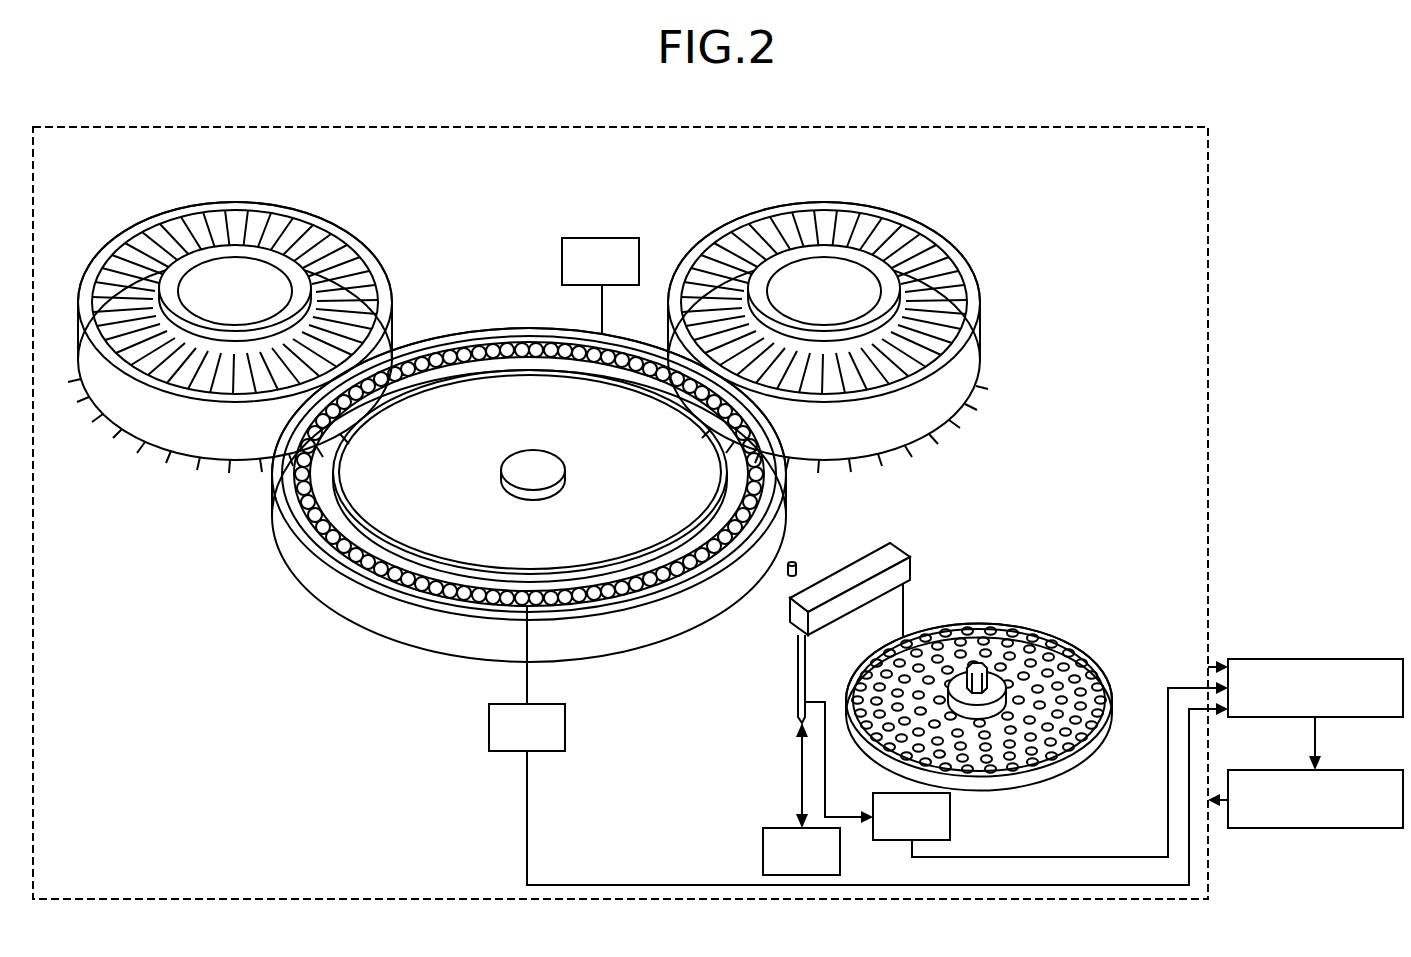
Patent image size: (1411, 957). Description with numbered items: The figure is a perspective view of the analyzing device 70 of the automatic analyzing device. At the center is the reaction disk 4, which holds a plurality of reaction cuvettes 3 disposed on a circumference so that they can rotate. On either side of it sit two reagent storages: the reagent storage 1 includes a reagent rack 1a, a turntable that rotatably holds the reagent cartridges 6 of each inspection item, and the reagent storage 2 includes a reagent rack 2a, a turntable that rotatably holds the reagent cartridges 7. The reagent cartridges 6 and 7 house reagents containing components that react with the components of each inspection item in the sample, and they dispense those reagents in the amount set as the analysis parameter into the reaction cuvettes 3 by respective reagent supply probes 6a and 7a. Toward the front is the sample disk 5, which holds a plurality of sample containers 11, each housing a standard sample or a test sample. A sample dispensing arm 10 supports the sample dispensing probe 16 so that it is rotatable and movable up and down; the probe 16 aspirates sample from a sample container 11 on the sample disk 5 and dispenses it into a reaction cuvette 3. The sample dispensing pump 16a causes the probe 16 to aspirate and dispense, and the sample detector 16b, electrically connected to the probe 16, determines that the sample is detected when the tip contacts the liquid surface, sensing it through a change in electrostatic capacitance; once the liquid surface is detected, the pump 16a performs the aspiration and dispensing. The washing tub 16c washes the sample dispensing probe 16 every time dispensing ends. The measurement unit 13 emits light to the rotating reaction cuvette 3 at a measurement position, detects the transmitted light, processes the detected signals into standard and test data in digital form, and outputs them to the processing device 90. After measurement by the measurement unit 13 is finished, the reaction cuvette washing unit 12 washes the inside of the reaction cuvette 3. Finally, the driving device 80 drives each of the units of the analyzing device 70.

The analyzing device 70 is at (771, 110).
The reagent storage 1 is at (238, 345).
The reagent rack 1a is at (283, 203).
The reagent cartridges 6 is at (345, 253).
The reagent supply probe 6a is at (207, 460).
The reagent storage 2 is at (850, 306).
The reagent rack 2a is at (877, 203).
The reagent cartridges 7 is at (937, 253).
The reagent supply probe 7a is at (975, 397).
The reaction cuvettes 3 is at (432, 592).
The reaction disk 4 is at (529, 528).
The reaction cuvette washing unit 12 is at (600, 286).
The measurement unit 13 is at (858, 745).
The sample dispensing probe 16 is at (907, 610).
The sample dispensing pump 16a is at (801, 799).
The sample detector 16b is at (1016, 769).
The washing tub 16c is at (797, 559).
The sample dispensing arm 10 is at (788, 605).
The sample containers 11 is at (1030, 626).
The sample disk 5 is at (982, 701).
The processing device 90 is at (1350, 640).
The driving device 80 is at (1350, 751).